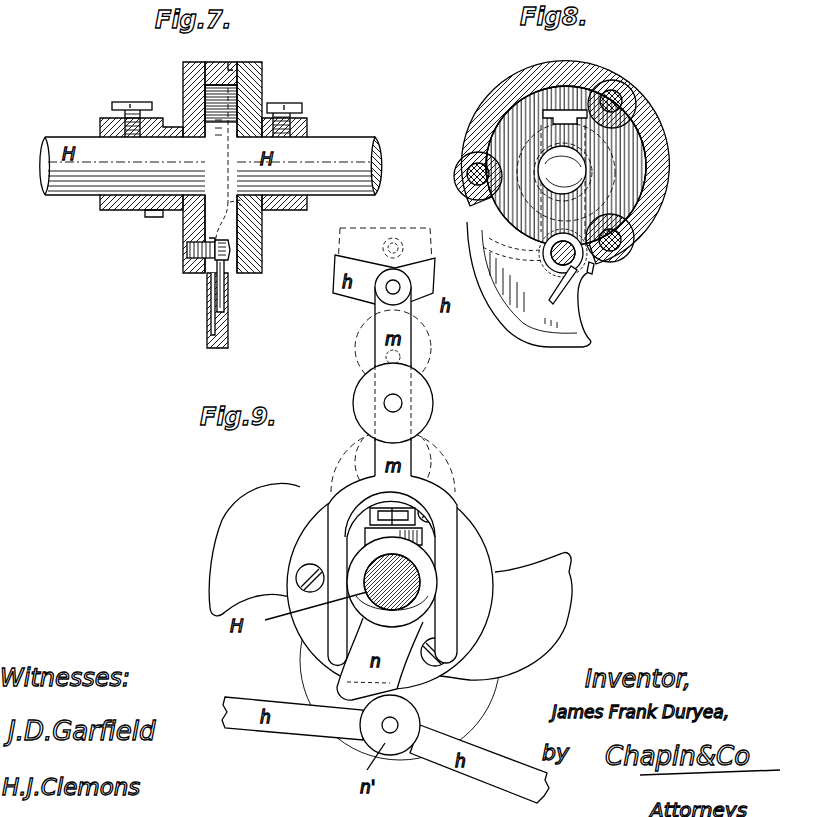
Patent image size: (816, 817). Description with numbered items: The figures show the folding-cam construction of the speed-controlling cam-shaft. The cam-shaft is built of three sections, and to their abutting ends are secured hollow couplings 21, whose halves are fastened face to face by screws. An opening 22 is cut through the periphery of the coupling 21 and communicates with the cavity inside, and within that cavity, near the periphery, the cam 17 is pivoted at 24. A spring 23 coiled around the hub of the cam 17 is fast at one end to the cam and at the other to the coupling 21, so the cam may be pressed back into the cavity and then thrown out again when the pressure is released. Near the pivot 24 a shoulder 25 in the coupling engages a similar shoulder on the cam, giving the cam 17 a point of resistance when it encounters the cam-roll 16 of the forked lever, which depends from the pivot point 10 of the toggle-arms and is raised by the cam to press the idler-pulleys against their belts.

In FIG. 9, the pivot point 10 is at (392, 292).
In FIG. 9, the cam-roll 16 is at (427, 395).
In FIG. 7, the cam 17 is at (228, 312).
In FIG. 8, the cam 17 is at (530, 284).
In FIG. 9, the cam 17 is at (254, 549).
In FIG. 7, the hollow coupling 21 is at (183, 70).
In FIG. 8, the hollow coupling 21 is at (670, 173).
In FIG. 8, the opening 22 is at (472, 221).
In FIG. 7, the spring 23 is at (224, 287).
In FIG. 8, the spring 23 is at (560, 300).
In FIG. 7, the pivot 24 is at (187, 252).
In FIG. 8, the pivot 24 is at (583, 267).
In FIG. 8, the shoulder 25 is at (594, 258).